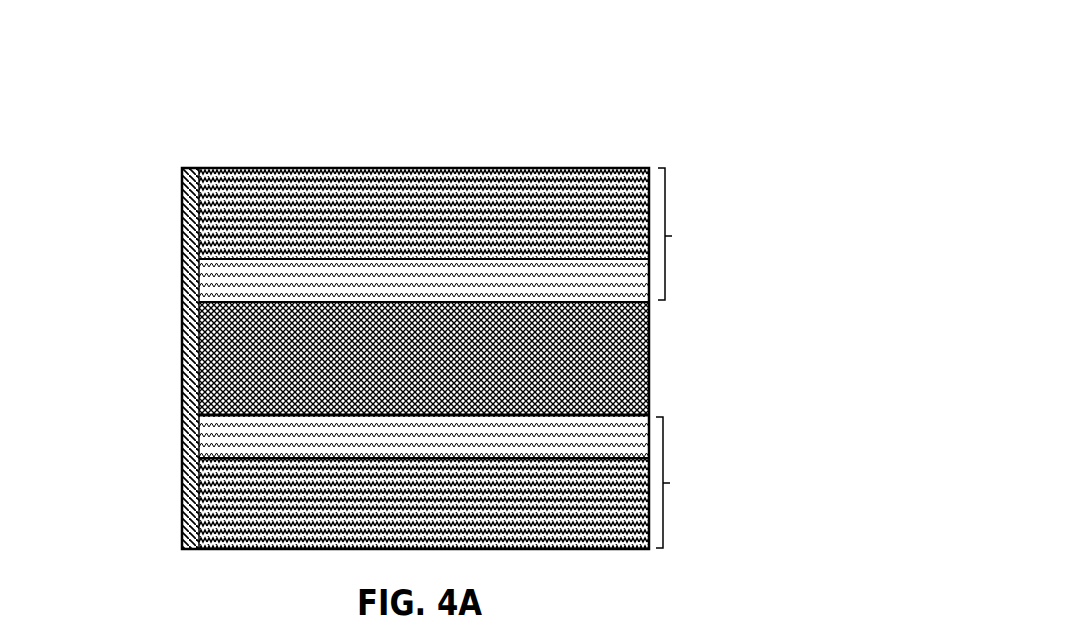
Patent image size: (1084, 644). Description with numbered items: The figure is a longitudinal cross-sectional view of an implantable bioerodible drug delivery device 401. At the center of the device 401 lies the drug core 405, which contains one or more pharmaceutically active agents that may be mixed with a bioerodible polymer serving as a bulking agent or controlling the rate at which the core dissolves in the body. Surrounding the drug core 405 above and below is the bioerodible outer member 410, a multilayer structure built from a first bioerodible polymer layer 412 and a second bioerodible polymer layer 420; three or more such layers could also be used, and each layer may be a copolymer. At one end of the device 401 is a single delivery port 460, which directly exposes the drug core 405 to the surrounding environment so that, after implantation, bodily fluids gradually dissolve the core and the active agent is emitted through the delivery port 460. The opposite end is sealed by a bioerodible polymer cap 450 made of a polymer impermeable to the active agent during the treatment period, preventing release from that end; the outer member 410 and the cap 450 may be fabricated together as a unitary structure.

The implantable drug delivery device 401 is at (208, 130).
The drug core 405 is at (423, 320).
The bioerodible outer member 410 is at (677, 476).
The first bioerodible polymer layer 412 is at (327, 283).
The second bioerodible polymer layer 420 is at (543, 167).
The bioerodible polymer cap 450 is at (179, 338).
The delivery port 460 is at (653, 343).